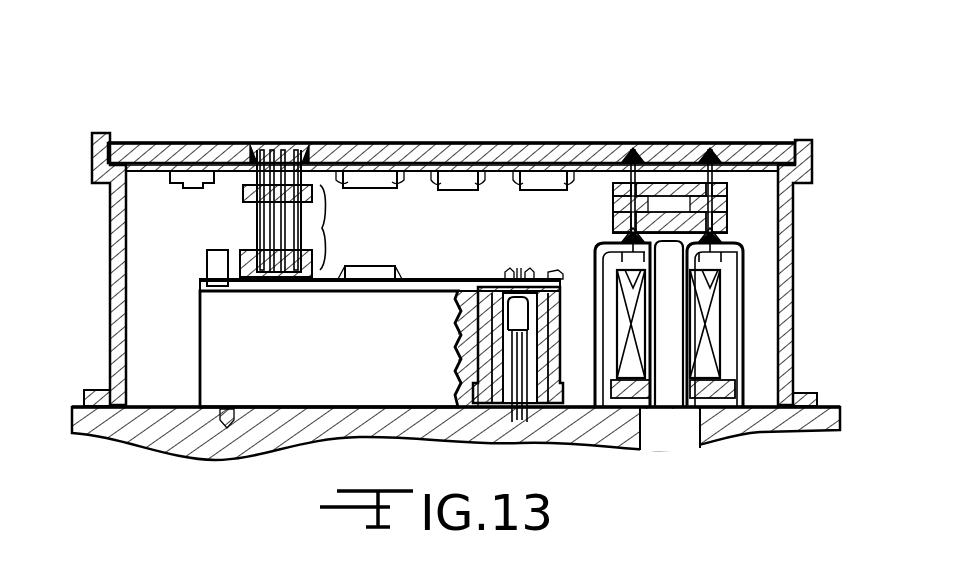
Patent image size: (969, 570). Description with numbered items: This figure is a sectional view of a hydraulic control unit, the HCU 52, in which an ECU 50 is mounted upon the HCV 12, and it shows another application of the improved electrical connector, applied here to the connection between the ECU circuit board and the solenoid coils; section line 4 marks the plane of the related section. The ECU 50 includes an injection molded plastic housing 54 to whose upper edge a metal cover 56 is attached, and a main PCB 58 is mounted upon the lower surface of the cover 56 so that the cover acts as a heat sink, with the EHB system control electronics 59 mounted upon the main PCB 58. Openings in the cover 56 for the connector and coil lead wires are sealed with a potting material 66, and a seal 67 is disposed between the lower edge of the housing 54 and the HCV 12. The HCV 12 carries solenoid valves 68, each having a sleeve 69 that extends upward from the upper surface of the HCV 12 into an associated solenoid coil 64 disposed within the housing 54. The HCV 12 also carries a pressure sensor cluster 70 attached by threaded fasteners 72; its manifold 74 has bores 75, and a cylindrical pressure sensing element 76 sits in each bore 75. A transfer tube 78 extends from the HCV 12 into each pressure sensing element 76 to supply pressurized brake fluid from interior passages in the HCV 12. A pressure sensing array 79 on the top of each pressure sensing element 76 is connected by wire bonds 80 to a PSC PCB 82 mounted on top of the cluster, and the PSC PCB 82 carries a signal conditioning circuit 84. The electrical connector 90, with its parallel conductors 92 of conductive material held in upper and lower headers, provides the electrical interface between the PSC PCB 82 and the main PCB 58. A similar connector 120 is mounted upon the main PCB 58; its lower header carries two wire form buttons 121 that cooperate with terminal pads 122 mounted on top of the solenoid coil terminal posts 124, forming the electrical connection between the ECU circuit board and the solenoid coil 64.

The section line 4- 4 is at (208, 103).
The HCV 12 is at (70, 418).
The ECU 50 is at (106, 292).
The HCU 52 is at (670, 84).
The housing 54 is at (793, 280).
The metal cover 56 is at (423, 152).
The main Printed Circuit Board 58 is at (493, 180).
The EHB system control electronics 59 is at (533, 178).
The solenoid coil 64 is at (649, 362).
The potting material 66 is at (452, 174).
The seal 67 is at (803, 400).
The solenoid valve 68 is at (676, 445).
The sleeve 69 is at (668, 358).
The Pressure Sensor Cluster 70 is at (192, 328).
The threaded fastener 72 is at (205, 268).
The manifold 74 is at (336, 354).
The bore 75 is at (563, 276).
The cylindrical pressure sensing element 76 is at (487, 436).
The transfer tube 78 is at (519, 442).
The pressure sensing array 79 is at (519, 277).
The wire bond 80 is at (508, 276).
The PSC PCB 82 is at (418, 279).
The signal conditioning circuit 84 is at (376, 266).
The electrical connector 90 is at (344, 227).
The parallel conductor 92 is at (243, 218).
The connector 120 is at (709, 212).
The wire form button 121 is at (697, 208).
The terminal pad 122 is at (618, 215).
The solenoid coil terminal post 124 is at (620, 238).